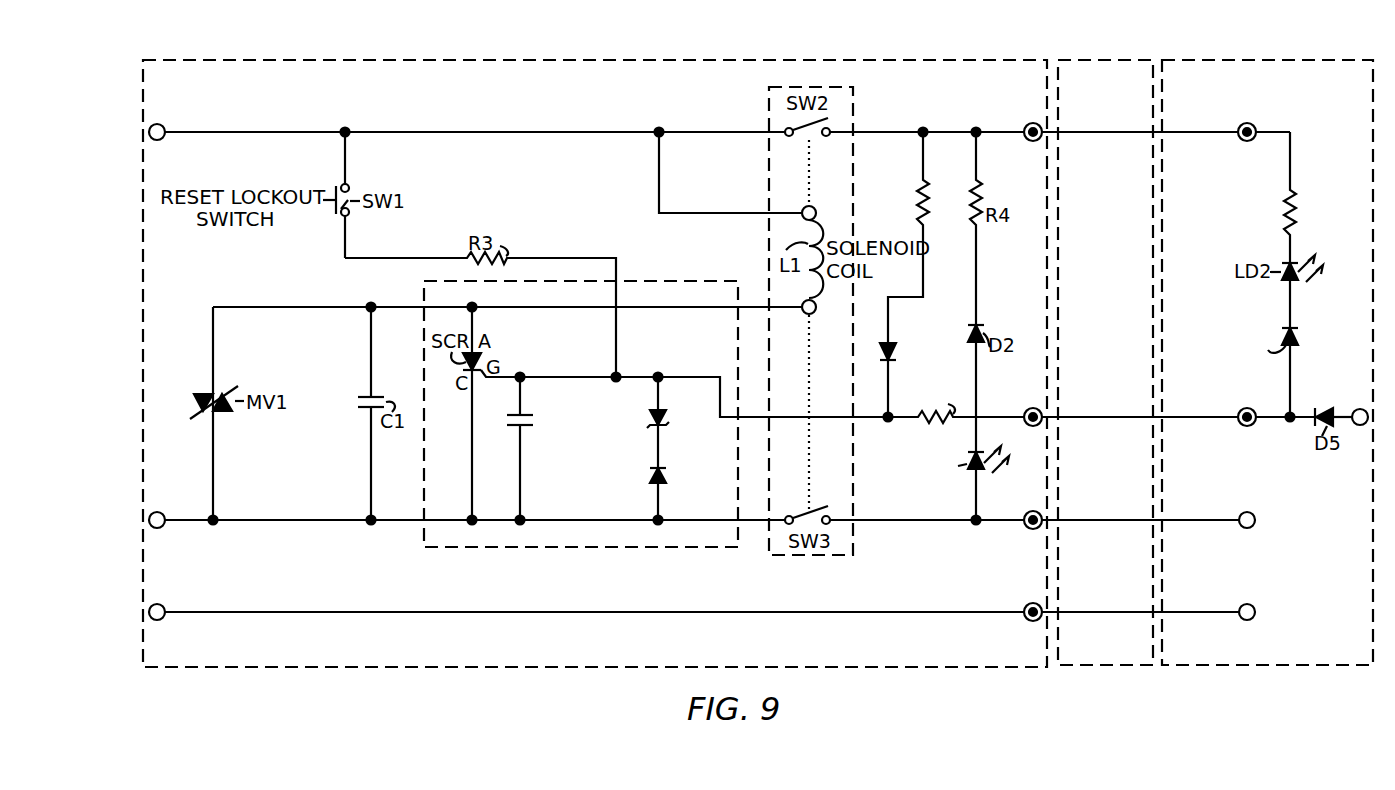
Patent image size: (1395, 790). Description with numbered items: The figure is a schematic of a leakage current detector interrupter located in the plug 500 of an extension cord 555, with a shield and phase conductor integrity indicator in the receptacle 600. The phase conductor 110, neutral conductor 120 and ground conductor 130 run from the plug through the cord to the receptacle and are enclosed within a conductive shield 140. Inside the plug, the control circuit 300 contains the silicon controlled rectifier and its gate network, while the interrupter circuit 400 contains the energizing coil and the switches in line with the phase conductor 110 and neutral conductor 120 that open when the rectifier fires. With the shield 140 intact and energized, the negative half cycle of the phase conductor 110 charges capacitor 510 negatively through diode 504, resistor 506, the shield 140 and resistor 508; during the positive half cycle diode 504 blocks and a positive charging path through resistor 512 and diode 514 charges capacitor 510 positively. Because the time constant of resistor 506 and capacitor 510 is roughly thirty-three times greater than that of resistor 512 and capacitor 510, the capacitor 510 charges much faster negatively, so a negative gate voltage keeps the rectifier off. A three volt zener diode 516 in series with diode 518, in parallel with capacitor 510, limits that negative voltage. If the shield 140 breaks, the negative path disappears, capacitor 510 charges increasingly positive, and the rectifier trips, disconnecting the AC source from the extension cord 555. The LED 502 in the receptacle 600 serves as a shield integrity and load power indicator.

The phase conductor 110 is at (255, 130).
The neutral conductor 120 is at (265, 521).
The ground conductor 130 is at (265, 613).
The shield 140 is at (1022, 413).
The control circuit 300 is at (454, 547).
The interrupter circuit 400 is at (769, 105).
The plug 500 is at (806, 60).
The LED 502 is at (972, 473).
The diode 504 is at (1300, 335).
The resistor 506 is at (1298, 208).
The resistor 508 is at (922, 425).
The capacitor 510 is at (535, 423).
The resistor 512 is at (928, 200).
The diode 514 is at (892, 348).
The zener diode 516 is at (648, 416).
The diode 518 is at (648, 470).
The extension cord 555 is at (1122, 667).
The receptacle 600 is at (1283, 666).